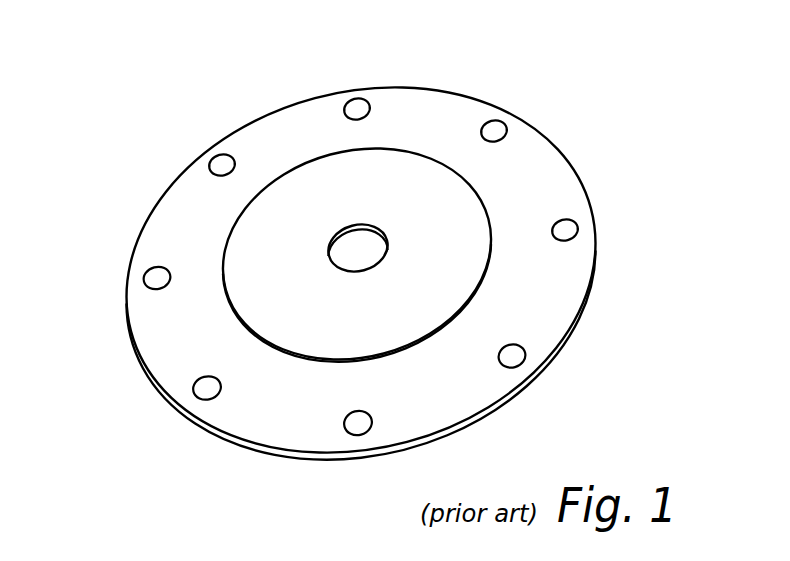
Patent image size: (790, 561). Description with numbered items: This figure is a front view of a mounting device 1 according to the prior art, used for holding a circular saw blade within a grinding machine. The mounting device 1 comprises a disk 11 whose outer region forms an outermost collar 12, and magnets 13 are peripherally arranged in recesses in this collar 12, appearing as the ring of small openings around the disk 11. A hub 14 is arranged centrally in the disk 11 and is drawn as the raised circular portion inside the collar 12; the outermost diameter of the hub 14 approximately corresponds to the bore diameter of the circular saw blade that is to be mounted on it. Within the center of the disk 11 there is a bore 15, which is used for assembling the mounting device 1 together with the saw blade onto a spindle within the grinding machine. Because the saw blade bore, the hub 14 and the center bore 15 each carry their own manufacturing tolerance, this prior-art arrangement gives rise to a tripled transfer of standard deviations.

The mounting device 1 is at (387, 269).
The disk 11 is at (533, 270).
The outermost collar 12 is at (568, 310).
The magnets 13 is at (513, 357).
The hub 14 is at (267, 317).
The bore 15 is at (361, 248).